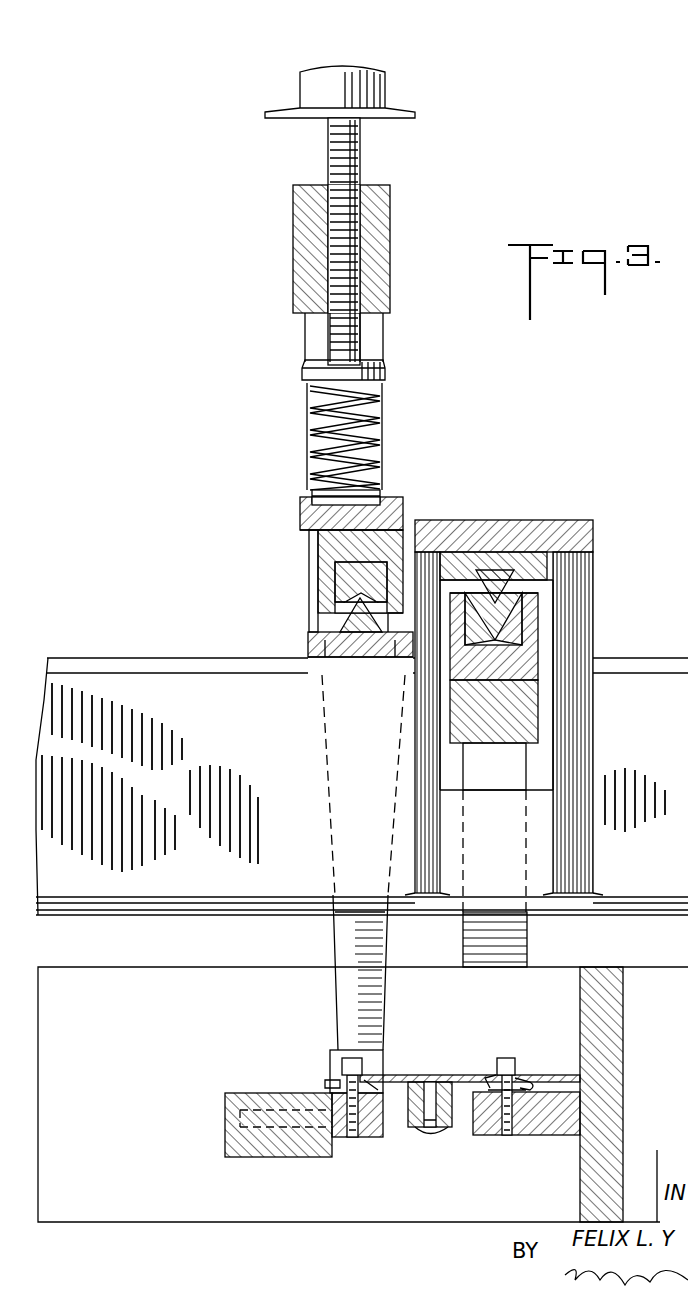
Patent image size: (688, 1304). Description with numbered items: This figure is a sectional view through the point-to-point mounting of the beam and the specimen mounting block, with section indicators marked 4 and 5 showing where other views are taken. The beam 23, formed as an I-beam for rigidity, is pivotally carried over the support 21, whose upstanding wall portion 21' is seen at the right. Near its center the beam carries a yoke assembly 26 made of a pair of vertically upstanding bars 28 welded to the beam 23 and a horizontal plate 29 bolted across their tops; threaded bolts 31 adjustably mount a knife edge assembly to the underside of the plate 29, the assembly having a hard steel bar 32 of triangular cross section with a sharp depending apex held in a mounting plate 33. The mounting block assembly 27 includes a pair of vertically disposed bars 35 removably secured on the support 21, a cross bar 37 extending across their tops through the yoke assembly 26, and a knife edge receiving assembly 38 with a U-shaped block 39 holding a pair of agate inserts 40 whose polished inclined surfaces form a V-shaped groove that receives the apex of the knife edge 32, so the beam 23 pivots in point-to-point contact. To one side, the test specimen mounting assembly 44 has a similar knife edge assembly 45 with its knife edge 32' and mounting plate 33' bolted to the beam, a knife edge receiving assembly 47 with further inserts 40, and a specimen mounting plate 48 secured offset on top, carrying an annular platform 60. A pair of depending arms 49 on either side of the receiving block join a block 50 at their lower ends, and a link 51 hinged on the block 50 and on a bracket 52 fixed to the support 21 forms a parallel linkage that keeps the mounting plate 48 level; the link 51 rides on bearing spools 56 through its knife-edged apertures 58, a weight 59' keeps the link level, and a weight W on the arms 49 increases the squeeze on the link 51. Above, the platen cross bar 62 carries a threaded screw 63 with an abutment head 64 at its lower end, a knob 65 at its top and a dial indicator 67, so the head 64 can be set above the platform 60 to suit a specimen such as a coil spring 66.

The section line 4- 4 is at (300, 22).
The section line 5- 5 is at (496, 472).
The support 21 is at (363, 1074).
The upstanding wall of base plate 21' is at (626, 1094).
The beam 23 is at (148, 660).
The yoke assembly 26 is at (642, 568).
The mounting block assembly 27 is at (546, 622).
The vertically upstanding bars 28 is at (432, 848).
The horizontal plate 29 is at (592, 520).
The threaded bolts 31 is at (503, 522).
The bar (knife edge) 32 is at (532, 593).
The knife edge 32' is at (322, 615).
The mounting plate 33 is at (540, 590).
The wedge support plate 33' is at (342, 674).
The vertically disposed bars 35 is at (522, 937).
The cross bar 37 is at (504, 745).
The knife edge receiving assembly 38 is at (530, 688).
The block 39 is at (522, 661).
The inserts 40 is at (338, 589).
The test specimen mounting assembly 44 is at (396, 493).
The knife edge assembly 45 is at (296, 637).
The knife edge receiving assembly 47 is at (312, 548).
The specimen mounting plate 48 is at (300, 513).
The depending arms 49 is at (350, 938).
The block 50 is at (372, 1138).
The link 51 is at (400, 1075).
The bracket 52 is at (550, 1137).
The bearing spool 56 is at (342, 1068).
The aperture 58 is at (530, 1082).
The weight 59' is at (429, 1128).
The platform 60 is at (310, 493).
The cross bar 62 is at (390, 238).
The threaded screw 63 is at (335, 150).
The abutment head 64 is at (386, 366).
The knob 65 is at (385, 80).
The coil spring 66 is at (310, 410).
The dial indicator 67 is at (285, 110).
The weight W is at (225, 1148).